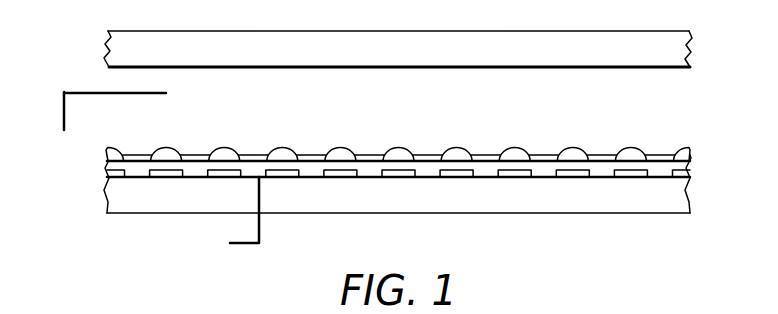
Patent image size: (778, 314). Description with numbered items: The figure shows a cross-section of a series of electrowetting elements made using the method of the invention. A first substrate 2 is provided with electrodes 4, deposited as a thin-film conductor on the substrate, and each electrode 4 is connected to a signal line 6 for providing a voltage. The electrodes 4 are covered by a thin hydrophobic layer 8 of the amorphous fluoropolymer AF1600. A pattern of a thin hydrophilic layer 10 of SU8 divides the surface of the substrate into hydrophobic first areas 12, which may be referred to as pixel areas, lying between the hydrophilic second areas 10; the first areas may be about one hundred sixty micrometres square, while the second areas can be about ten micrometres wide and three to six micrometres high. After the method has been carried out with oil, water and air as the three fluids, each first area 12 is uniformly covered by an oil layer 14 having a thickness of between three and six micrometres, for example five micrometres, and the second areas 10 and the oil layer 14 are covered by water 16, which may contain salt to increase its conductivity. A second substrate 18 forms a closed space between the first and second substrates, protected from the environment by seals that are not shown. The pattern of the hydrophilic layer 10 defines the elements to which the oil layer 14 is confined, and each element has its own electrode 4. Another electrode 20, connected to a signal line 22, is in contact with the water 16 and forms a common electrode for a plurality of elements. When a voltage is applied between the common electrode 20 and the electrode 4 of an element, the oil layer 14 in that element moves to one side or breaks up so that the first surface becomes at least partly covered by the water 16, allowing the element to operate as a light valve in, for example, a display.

The first substrate 2 is at (695, 198).
The electrode 4 is at (268, 174).
The signal line 6 is at (238, 243).
The hydrophobic layer 8 is at (487, 172).
The hydrophilic layer 10 is at (658, 153).
The first areas 12 is at (458, 160).
The oil layer 14 is at (572, 147).
The water 16 is at (672, 110).
The second substrate 18 is at (695, 50).
The common electrode 20 is at (96, 93).
The signal line 22 is at (62, 115).